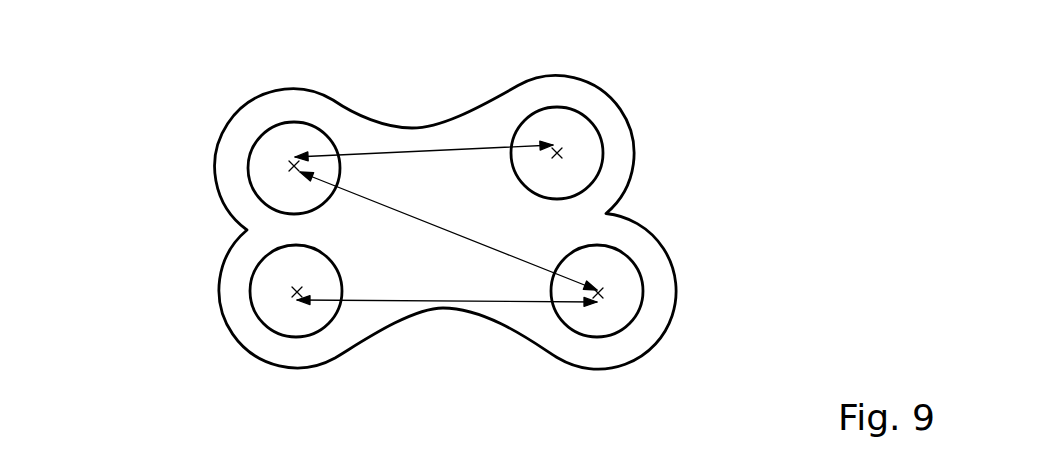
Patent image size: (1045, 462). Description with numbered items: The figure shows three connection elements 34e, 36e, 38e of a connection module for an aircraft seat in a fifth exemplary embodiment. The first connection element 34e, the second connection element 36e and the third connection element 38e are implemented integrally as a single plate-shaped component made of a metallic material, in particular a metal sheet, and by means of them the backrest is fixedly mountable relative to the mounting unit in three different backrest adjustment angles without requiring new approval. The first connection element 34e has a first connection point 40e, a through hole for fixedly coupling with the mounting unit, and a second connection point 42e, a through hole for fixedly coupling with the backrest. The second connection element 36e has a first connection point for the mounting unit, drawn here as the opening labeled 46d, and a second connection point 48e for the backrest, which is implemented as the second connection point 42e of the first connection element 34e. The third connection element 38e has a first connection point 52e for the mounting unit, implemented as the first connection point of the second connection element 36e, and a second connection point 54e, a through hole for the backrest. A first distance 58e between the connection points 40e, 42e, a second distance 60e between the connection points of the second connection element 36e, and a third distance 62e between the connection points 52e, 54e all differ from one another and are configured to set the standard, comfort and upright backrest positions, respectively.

The first connection element 34e is at (559, 223).
The second connection element 36e is at (559, 223).
The third connection element 38e is at (640, 248).
The first connection point 40e is at (273, 282).
The second connection point 42e is at (715, 291).
The third receiving opening 46d is at (187, 168).
The second connection point 48e is at (618, 298).
The first connection point 52e is at (275, 170).
The second connection point 54e is at (573, 136).
The first distance 58e is at (355, 302).
The second distance 60e is at (458, 236).
The third distance 62e is at (415, 152).